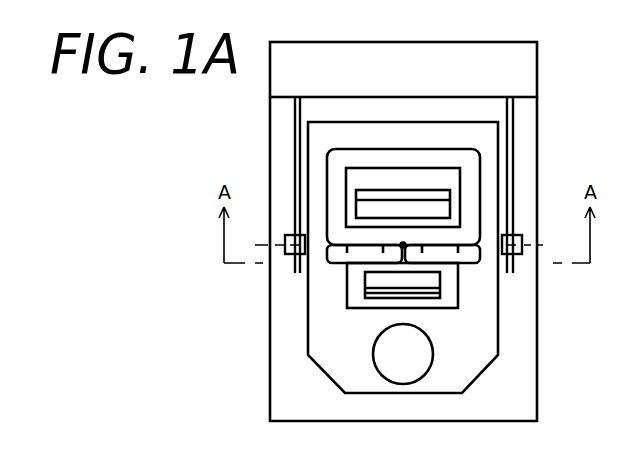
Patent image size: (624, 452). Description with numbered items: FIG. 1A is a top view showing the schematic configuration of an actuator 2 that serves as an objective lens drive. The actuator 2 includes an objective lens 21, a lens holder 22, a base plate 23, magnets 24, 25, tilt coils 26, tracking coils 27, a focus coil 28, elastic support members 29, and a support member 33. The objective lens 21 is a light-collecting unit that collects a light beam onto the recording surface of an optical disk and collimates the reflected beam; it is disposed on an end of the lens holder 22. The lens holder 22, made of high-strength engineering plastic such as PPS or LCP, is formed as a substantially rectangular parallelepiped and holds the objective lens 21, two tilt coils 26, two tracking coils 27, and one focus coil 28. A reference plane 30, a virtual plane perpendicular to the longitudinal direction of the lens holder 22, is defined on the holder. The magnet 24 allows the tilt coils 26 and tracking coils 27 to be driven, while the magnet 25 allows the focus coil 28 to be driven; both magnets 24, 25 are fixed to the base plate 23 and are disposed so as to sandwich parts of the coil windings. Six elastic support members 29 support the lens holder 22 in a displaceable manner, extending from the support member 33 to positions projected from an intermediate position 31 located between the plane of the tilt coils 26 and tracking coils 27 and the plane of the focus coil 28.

The actuator 2 is at (507, 9).
The objective lens 21 is at (382, 359).
The lens holder 22 is at (478, 360).
The base plate 23 is at (527, 400).
The magnet 24 is at (425, 283).
The magnet 25 is at (385, 211).
The tilt coils 26 is at (470, 265).
The tracking coils 27 is at (342, 265).
The focus coil 28 is at (423, 158).
The elastic support members 29 is at (297, 118).
The reference plane 30 is at (548, 245).
The intermediate position 31 is at (403, 247).
The support member 33 is at (528, 61).